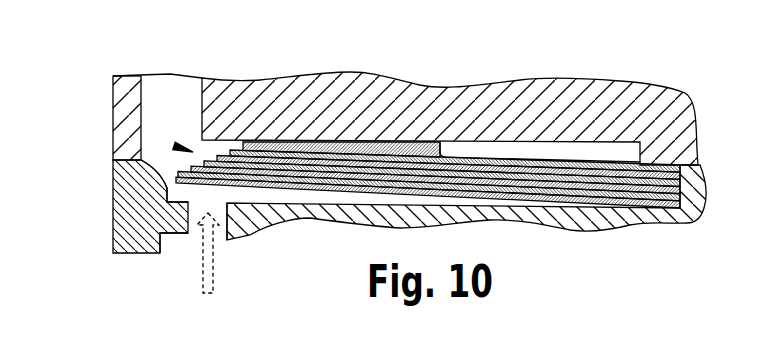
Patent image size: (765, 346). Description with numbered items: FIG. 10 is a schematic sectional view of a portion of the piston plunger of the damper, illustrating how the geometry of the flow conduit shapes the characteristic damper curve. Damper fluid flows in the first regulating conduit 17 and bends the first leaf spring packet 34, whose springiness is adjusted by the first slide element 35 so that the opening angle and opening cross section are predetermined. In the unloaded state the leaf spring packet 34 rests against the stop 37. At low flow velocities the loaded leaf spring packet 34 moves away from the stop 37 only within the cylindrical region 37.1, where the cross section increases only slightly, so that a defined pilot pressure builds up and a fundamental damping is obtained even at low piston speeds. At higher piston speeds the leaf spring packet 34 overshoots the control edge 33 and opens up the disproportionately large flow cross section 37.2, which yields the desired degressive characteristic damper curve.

The first regulating conduit 17 is at (172, 102).
The first leaf spring packet 34 is at (176, 146).
The disproportionately large flow cross section 37.2 is at (142, 170).
The control edge 33 is at (167, 189).
The cylindrical region 37.1 is at (184, 222).
The stop 37 is at (186, 249).
The first slide element 35 is at (555, 153).